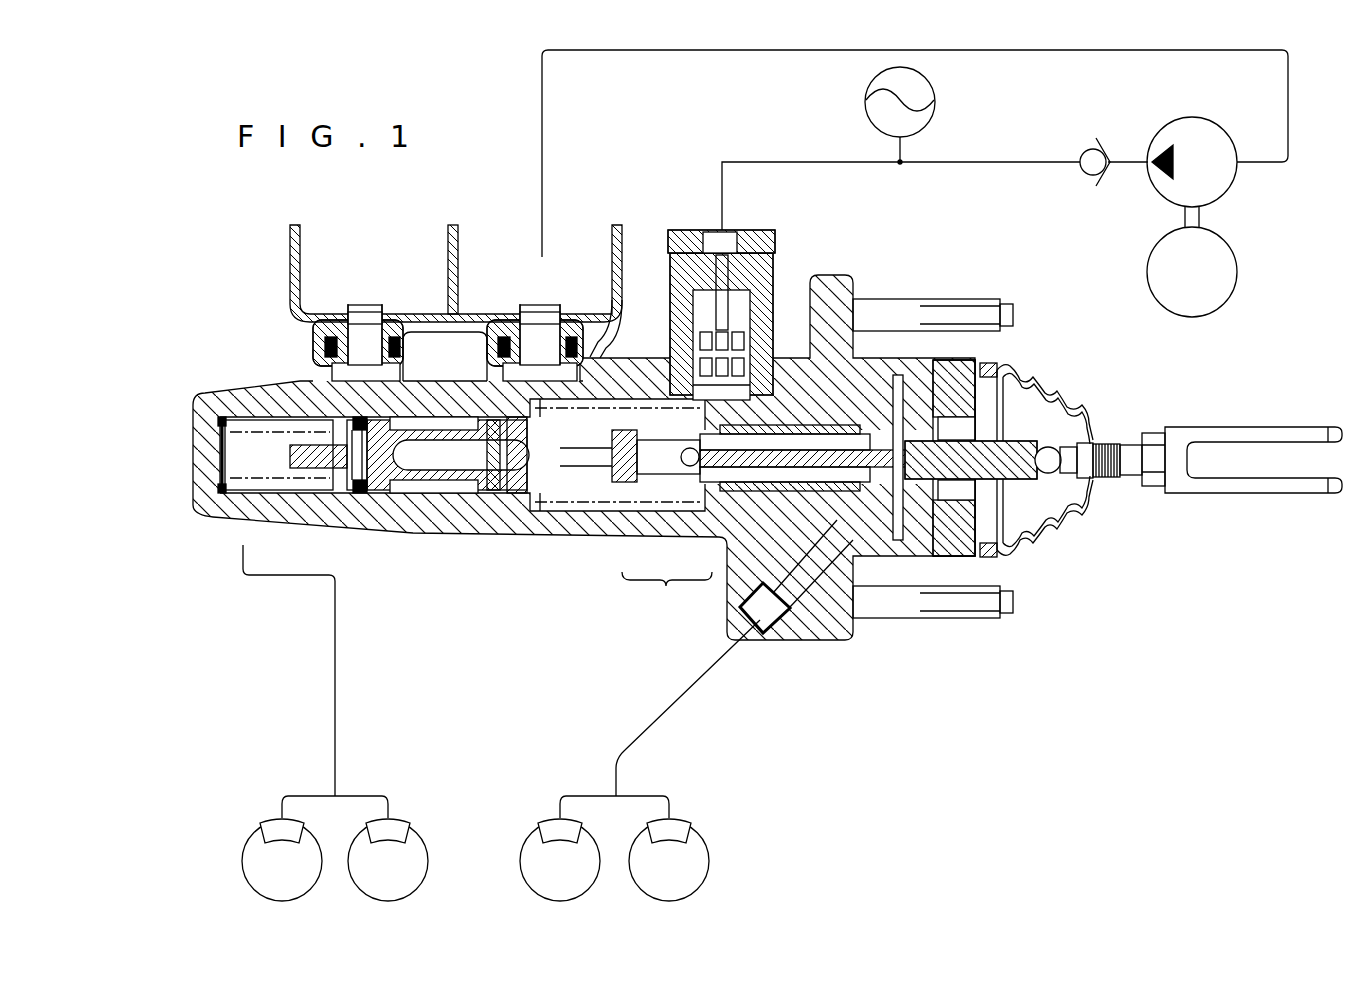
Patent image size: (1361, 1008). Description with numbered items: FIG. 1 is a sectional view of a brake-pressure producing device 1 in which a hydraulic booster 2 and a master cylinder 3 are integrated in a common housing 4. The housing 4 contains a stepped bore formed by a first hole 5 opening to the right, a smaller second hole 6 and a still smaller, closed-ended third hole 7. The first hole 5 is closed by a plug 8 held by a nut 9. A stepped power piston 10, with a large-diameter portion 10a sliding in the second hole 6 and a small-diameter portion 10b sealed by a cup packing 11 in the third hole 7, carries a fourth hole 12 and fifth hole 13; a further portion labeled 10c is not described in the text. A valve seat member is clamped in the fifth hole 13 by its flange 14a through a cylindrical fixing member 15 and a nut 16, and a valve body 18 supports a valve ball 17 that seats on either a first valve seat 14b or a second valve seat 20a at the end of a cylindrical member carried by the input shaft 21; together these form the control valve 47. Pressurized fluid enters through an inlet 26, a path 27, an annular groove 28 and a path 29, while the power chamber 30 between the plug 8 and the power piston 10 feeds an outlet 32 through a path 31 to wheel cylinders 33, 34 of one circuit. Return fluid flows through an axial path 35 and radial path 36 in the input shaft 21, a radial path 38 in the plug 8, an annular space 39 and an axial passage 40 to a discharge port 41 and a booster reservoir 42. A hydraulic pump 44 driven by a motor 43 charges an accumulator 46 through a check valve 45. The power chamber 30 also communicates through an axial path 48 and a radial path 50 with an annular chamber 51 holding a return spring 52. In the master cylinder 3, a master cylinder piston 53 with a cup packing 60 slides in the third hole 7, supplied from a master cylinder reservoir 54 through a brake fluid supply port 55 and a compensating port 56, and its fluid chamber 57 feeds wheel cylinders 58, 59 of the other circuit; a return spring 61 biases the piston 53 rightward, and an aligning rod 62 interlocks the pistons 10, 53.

The brake-pressure producing device 1 is at (913, 668).
The hydraulic booster 2 is at (815, 300).
The master cylinder 3 is at (410, 533).
The housing 4 is at (620, 490).
The first hole 5 is at (930, 556).
The second hole 6 is at (605, 495).
The third hole 7 is at (262, 435).
The plug 8 is at (960, 618).
The nut 9 is at (987, 547).
The power piston 10 is at (735, 590).
The large-diameter portion 10a is at (860, 415).
The small-diameter portion 10b is at (493, 490).
The chamber 10c is at (650, 510).
The cup packing 11 is at (515, 490).
The fourth hole 12 is at (822, 560).
The fifth hole 13 is at (615, 500).
The flange 14a is at (670, 420).
The first valve seat 14b is at (665, 505).
The cylindrical fixing member 15 is at (800, 360).
The nut 16 is at (868, 330).
The valve ball 17 is at (640, 490).
The valve body 18 is at (590, 500).
The second valve seat 20a is at (700, 490).
The input shaft 21 is at (1012, 467).
The inlet 26 is at (728, 240).
The path 27 is at (680, 330).
The annular groove 28 is at (760, 395).
The path 29 is at (722, 540).
The power chamber 30 is at (880, 560).
The path 31 is at (810, 580).
The outlet 32 is at (760, 630).
The wheel cylinder 33 is at (680, 826).
The wheel cylinder 34 is at (553, 826).
The axial path 35 is at (895, 556).
The radial path 36 is at (990, 366).
The radial path 38 is at (950, 380).
The annular space 39 is at (900, 400).
The axial passage 40 is at (843, 410).
The discharge port 41 is at (538, 325).
The booster reservoir 42 is at (505, 264).
The motor 43 is at (1226, 292).
The hydraulic pump 44 is at (1226, 182).
The check valve 45 is at (1090, 176).
The accumulator 46 is at (932, 112).
The control valve 47 is at (667, 591).
The axial path 48 is at (660, 400).
The radial path 50 is at (600, 372).
The annular chamber 51 is at (556, 505).
The return spring 52 is at (478, 380).
The master cylinder piston 53 is at (400, 490).
The master cylinder reservoir 54 is at (456, 295).
The brake fluid supply port 55 is at (418, 380).
The compensating port 56 is at (328, 390).
The fluid chamber 57 is at (262, 490).
The wheel cylinder 58 is at (398, 826).
The wheel cylinder 59 is at (275, 826).
The cup packing 60 is at (357, 490).
The return spring 61 is at (235, 495).
The aligning rod 62 is at (460, 470).